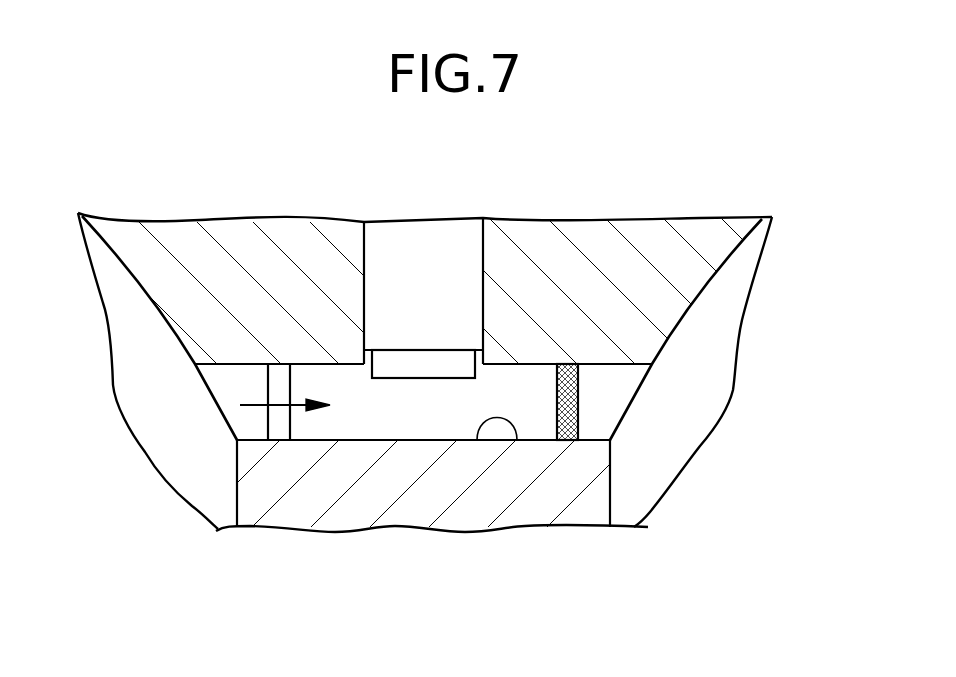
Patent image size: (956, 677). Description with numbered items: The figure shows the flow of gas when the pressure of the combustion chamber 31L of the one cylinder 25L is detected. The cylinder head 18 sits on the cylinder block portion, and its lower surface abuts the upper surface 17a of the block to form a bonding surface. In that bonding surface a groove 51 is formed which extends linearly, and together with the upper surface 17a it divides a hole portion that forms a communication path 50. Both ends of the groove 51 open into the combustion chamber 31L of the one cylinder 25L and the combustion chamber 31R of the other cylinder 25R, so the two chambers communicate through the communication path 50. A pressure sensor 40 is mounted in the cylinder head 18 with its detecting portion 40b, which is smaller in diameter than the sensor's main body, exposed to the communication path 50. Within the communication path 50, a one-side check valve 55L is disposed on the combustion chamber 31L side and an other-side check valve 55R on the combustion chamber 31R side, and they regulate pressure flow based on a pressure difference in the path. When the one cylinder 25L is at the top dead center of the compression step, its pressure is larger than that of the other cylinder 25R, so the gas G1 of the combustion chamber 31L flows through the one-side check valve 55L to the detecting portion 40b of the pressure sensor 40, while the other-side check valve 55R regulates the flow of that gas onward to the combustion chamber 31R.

The cylinder head 18 is at (637, 217).
The pressure sensor 40 is at (448, 217).
The detecting portion 40b is at (410, 367).
The groove 51 is at (230, 383).
The combustion chamber 31L is at (163, 427).
The combustion chamber 31R is at (693, 403).
The cylinder 25L is at (143, 383).
The cylinder 25R is at (713, 343).
The communication path 50 is at (413, 415).
The one-side check valve 55L is at (266, 420).
The other-side check valve 55R is at (572, 403).
The upper surface 17a is at (517, 440).
The gas G1 is at (235, 442).